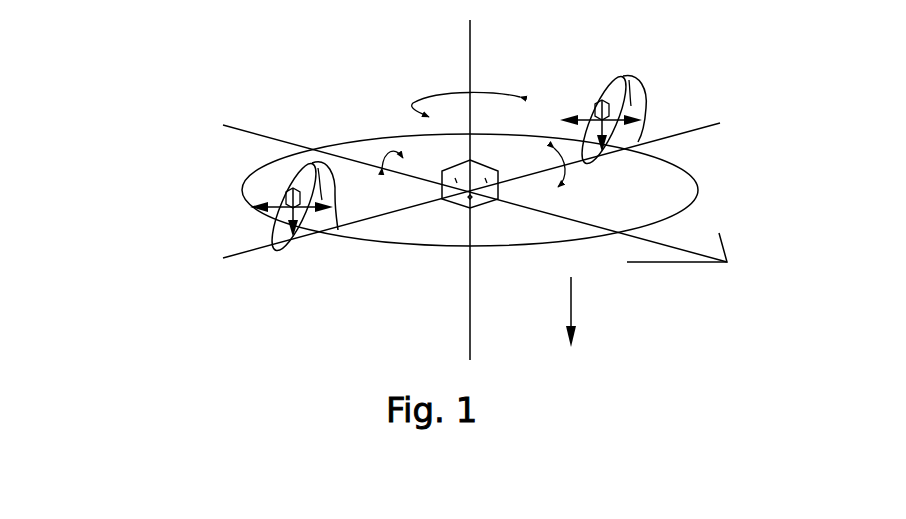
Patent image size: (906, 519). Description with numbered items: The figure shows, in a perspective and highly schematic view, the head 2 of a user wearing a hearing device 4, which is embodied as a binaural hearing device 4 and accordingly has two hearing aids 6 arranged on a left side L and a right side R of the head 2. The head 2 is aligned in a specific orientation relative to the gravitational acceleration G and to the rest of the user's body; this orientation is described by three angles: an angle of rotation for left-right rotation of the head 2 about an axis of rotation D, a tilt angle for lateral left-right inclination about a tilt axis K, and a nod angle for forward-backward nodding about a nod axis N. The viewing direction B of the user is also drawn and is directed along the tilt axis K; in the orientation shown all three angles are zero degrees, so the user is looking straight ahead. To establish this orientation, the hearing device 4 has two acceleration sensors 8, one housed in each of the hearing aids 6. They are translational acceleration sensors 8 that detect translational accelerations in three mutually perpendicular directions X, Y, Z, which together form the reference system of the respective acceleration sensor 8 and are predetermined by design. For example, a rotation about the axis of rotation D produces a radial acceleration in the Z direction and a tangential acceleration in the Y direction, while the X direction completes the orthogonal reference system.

The head 2 is at (443, 247).
The hearing device 4 is at (684, 73).
The hearing aids 6 is at (280, 246).
The acceleration sensors 8 is at (283, 182).
The axis of rotation D is at (466, 72).
The tilt axis K is at (258, 134).
The left side L is at (767, 109).
The nod axis N is at (686, 137).
The right side R is at (128, 306).
The gravitational acceleration G is at (573, 297).
The viewing direction B is at (685, 265).
The X-direction X is at (285, 254).
The Y-direction Y is at (333, 205).
The Z-direction Z is at (262, 210).